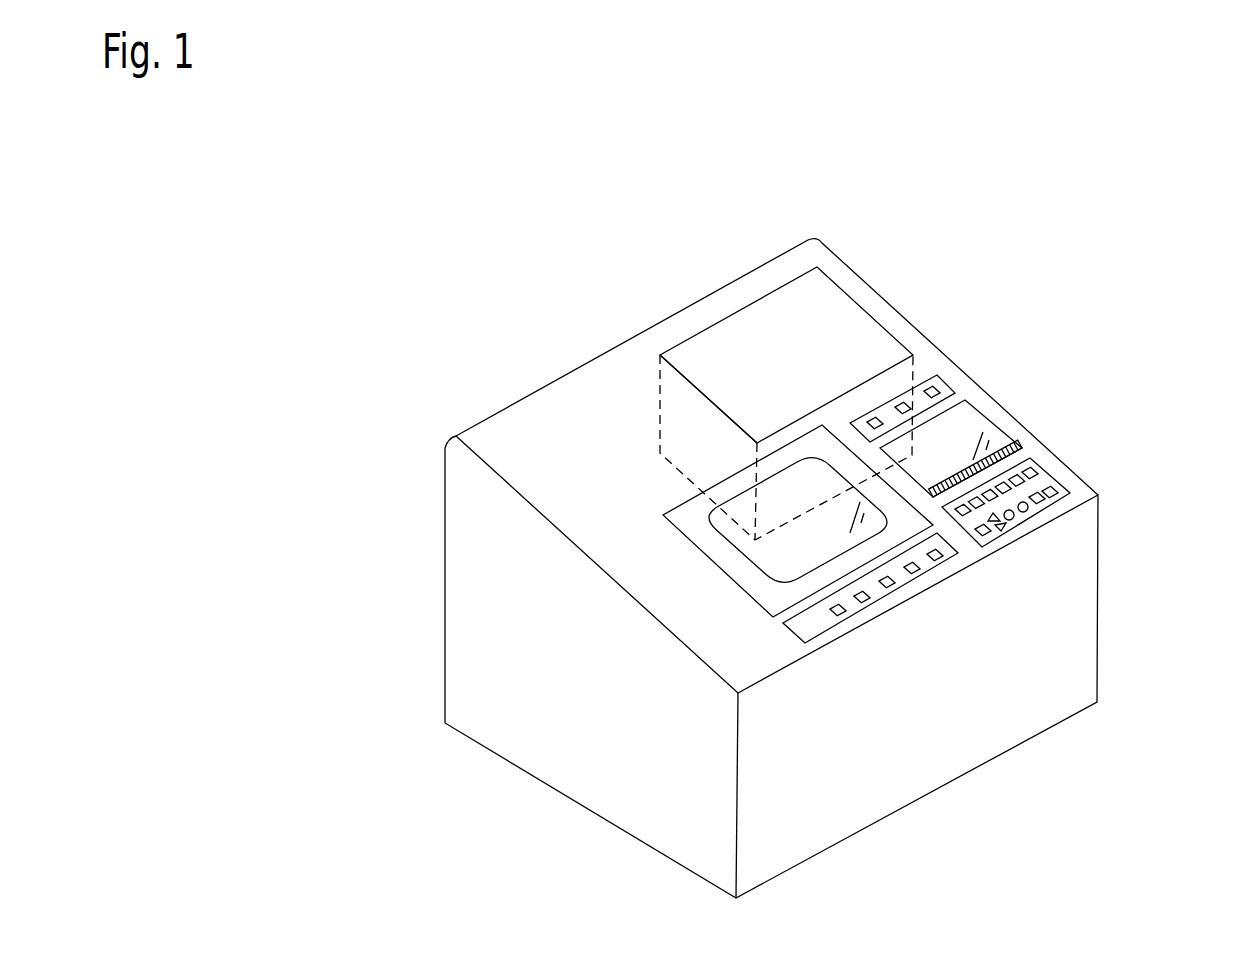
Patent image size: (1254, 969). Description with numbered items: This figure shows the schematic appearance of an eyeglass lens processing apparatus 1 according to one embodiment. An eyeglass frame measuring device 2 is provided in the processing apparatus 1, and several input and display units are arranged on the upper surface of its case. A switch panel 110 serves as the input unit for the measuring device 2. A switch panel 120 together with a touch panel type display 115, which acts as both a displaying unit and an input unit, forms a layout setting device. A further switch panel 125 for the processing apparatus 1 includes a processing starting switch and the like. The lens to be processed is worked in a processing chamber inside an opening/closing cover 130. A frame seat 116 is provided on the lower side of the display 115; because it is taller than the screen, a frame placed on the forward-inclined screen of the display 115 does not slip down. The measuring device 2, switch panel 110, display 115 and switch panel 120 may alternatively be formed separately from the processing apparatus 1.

The eyeglass lens processing apparatus 1 is at (626, 262).
The eyeglass frame measuring device 2 is at (835, 302).
The switch panel 110 is at (940, 382).
The touch panel type display 115 is at (983, 432).
The frame seat 116 is at (1022, 448).
The switch panel 120 is at (1013, 528).
The switch panel 125 is at (927, 580).
The opening/closing cover 130 is at (717, 553).